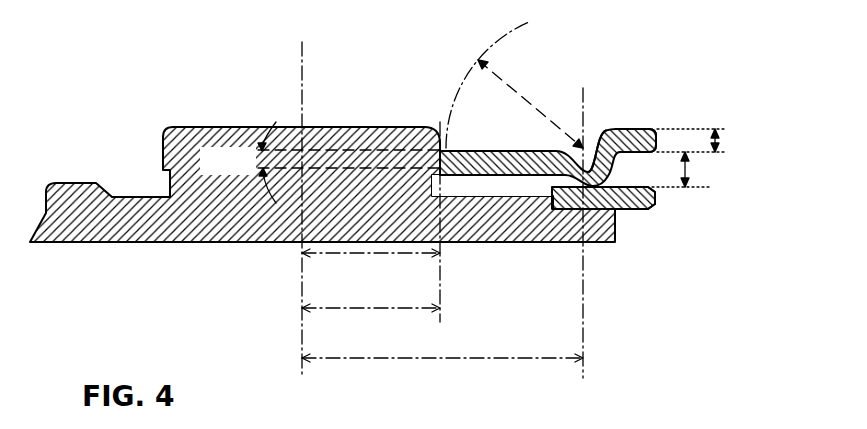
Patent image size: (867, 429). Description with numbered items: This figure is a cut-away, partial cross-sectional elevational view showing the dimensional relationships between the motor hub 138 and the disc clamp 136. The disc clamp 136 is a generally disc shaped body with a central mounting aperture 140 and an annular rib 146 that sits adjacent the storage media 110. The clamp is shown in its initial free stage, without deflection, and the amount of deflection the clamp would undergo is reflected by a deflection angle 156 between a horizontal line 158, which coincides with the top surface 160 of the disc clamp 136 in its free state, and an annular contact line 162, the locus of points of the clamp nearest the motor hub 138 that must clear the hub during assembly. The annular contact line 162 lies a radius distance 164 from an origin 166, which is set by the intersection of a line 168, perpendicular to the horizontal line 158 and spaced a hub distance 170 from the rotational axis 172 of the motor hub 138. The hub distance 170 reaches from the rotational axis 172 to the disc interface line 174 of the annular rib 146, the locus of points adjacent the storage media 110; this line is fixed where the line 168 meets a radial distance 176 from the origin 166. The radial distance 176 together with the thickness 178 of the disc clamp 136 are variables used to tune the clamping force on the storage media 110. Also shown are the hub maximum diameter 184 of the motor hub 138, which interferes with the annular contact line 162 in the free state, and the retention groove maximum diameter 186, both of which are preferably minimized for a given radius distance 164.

The storage media 110 is at (653, 197).
The disc clamp 136 is at (474, 182).
The motor hub 138 is at (112, 224).
The mounting aperture 140 is at (540, 158).
The annular rib 146 is at (606, 182).
The angle A1 156 is at (200, 163).
The horizontal line 158 is at (358, 151).
The top surface 160 is at (540, 148).
The annular contact line 162 is at (439, 149).
The radius distance R 164 is at (545, 73).
The origin 166 is at (593, 142).
The line 168 is at (583, 290).
The distance D 170 is at (462, 387).
The rotational axis 172 is at (302, 342).
The disc interface line 174 is at (607, 210).
The radial distance r 176 is at (716, 176).
The thickness t 178 is at (752, 138).
The maximum diameter d1 184 is at (367, 337).
The maximum diameter d2 186 is at (366, 278).